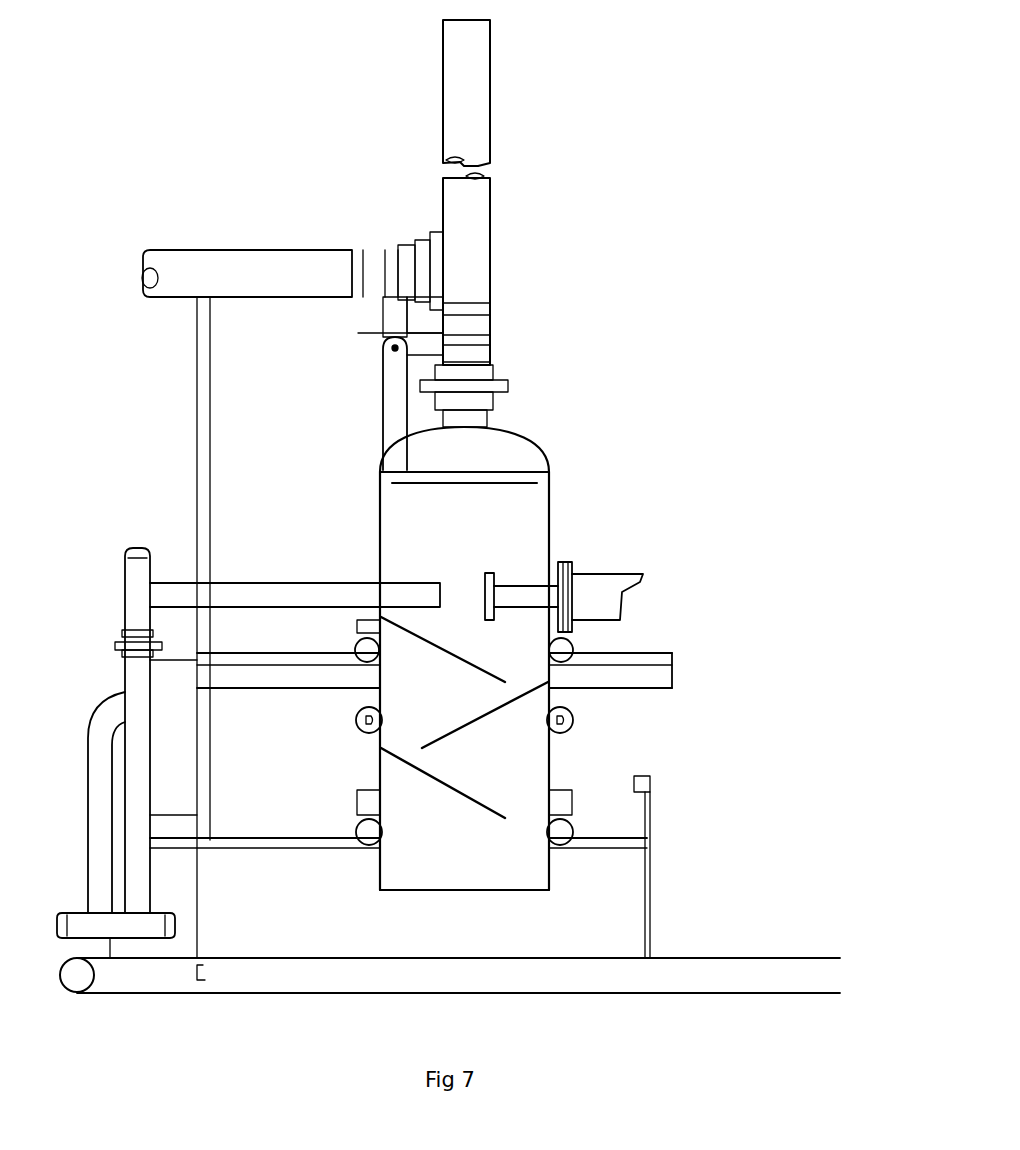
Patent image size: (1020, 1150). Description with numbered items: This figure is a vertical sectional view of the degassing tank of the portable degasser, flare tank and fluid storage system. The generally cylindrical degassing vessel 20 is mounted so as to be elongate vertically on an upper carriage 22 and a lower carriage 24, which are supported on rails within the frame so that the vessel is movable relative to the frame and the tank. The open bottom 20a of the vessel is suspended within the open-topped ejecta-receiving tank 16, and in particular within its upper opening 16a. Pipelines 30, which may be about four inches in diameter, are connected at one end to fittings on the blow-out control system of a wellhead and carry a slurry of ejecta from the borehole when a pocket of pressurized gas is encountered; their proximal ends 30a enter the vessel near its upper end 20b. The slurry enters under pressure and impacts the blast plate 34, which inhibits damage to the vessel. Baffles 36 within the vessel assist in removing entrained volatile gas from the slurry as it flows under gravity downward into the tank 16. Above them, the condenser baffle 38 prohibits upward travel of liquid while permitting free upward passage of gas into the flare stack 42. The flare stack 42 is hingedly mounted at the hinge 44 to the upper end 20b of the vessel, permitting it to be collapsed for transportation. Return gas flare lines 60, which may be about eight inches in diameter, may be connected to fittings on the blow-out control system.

The ejecta-receiving tank 16 is at (450, 645).
The upper opening 16a is at (265, 836).
The degassing vessel 20 is at (495, 656).
The open bottom 20a is at (468, 894).
The upper end 20b is at (514, 440).
The upper carriage 22 is at (576, 645).
The lower carriage 24 is at (574, 799).
The pipelines 30 is at (122, 660).
The proximal ends 30a is at (345, 590).
The blast plate 34 is at (492, 570).
The baffles 36 is at (465, 716).
The condenser baffle 38 is at (429, 490).
The flare stack 42 is at (494, 228).
The hinge 44 is at (380, 355).
The return gas flare lines 60 is at (236, 262).